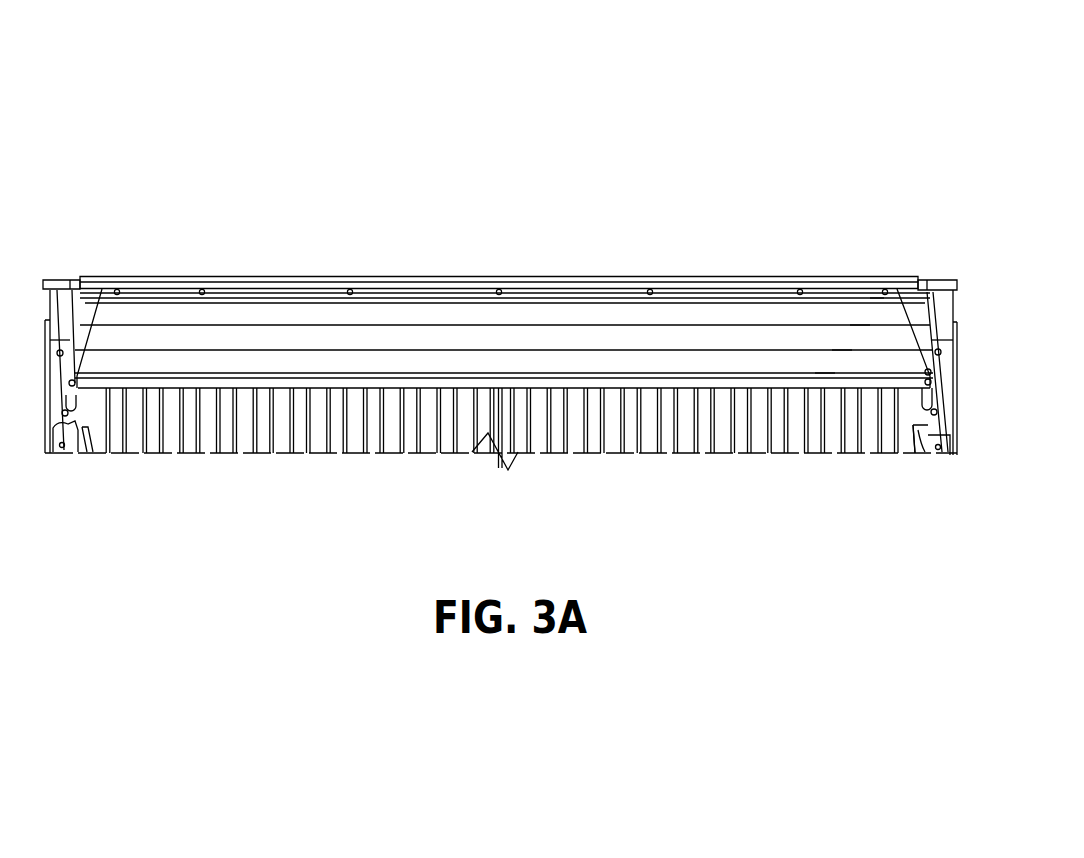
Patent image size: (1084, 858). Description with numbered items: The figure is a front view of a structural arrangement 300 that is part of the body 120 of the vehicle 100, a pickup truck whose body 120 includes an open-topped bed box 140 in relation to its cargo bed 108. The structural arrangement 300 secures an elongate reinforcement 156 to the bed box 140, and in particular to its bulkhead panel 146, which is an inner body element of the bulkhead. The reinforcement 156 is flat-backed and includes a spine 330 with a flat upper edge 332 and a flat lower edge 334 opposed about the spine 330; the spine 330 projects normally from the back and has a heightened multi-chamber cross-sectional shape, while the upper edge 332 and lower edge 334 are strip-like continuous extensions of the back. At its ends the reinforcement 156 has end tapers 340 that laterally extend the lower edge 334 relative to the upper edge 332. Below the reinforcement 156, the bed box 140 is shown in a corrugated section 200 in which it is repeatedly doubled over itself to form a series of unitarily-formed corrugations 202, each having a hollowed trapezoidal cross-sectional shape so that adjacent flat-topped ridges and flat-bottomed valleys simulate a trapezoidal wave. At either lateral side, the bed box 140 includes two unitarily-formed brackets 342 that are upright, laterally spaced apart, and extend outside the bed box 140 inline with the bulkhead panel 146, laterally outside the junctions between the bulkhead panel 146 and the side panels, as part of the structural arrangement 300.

The vehicle 100 is at (93, 276).
The bed 108 is at (153, 276).
The body 120 is at (231, 276).
The bed box 140 is at (317, 277).
The structural arrangement 300 is at (498, 289).
The end tapers 340 is at (915, 290).
The reinforcement 156 is at (877, 300).
The spine 330 is at (860, 323).
The upper edge 332 is at (842, 350).
The lower edge 334 is at (825, 373).
The corrugations 202 is at (848, 437).
The corrugated section 200 is at (502, 453).
The bulkhead panel 146 is at (885, 453).
The brackets 342 is at (923, 453).